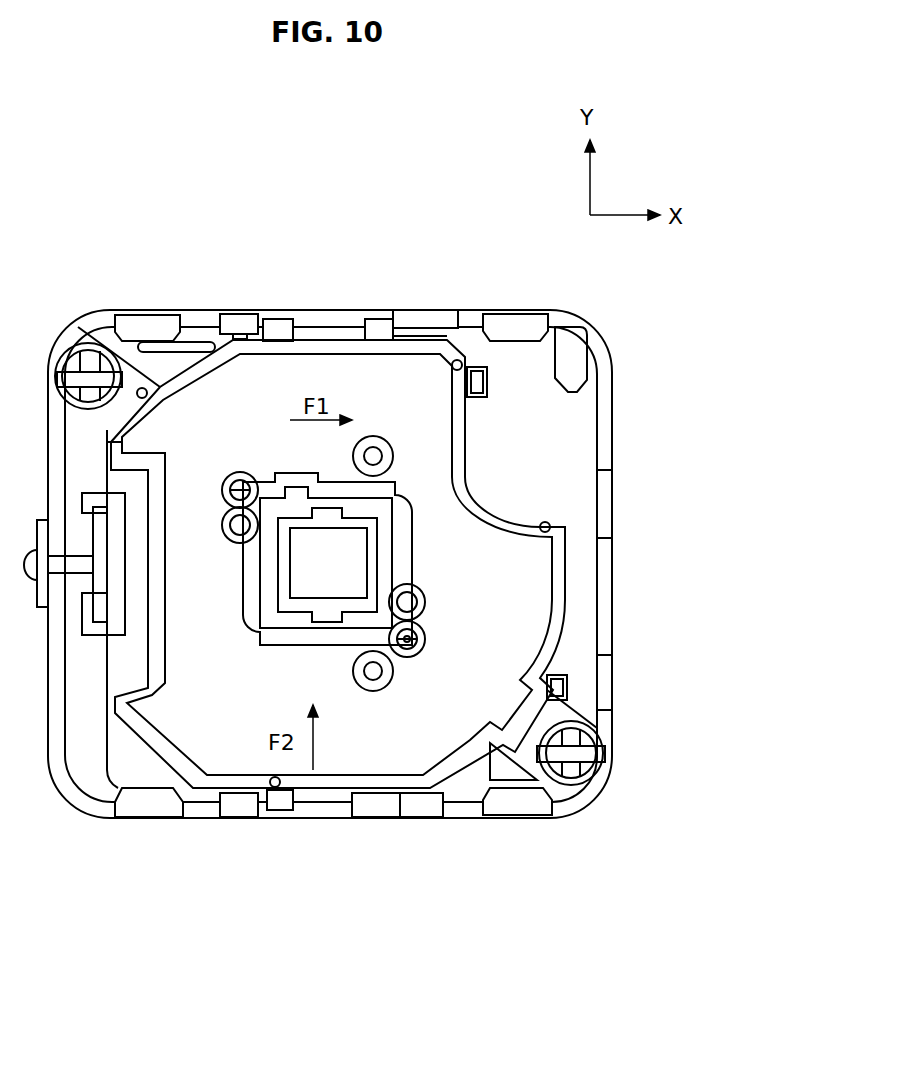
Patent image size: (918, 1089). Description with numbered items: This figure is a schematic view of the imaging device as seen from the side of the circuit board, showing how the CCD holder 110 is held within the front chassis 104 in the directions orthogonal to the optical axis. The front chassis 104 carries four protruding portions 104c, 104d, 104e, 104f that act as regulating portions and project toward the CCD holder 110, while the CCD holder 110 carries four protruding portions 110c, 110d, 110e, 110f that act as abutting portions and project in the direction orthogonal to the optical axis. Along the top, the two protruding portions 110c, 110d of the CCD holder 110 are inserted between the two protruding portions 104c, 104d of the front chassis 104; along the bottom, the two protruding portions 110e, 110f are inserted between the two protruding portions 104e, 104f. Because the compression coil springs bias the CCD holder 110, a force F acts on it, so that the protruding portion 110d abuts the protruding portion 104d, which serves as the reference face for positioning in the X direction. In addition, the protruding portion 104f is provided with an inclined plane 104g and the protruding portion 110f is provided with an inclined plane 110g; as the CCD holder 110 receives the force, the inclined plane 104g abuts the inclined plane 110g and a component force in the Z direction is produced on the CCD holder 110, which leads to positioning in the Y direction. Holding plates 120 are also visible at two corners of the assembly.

The front chassis 104 is at (616, 386).
The CCD holder 110 is at (203, 397).
The holding plate 120 is at (73, 378).
The protruding portion 104c is at (232, 327).
The protruding portion 110c is at (285, 331).
The protruding portion 104d is at (435, 320).
The protruding portion 110d is at (380, 318).
The protruding portion 104e is at (238, 815).
The protruding portion 110e is at (287, 812).
The protruding portion 104f is at (423, 808).
The protruding portion 110f is at (365, 803).
The inclined plane 104g is at (390, 795).
The inclined plane 110g is at (387, 800).